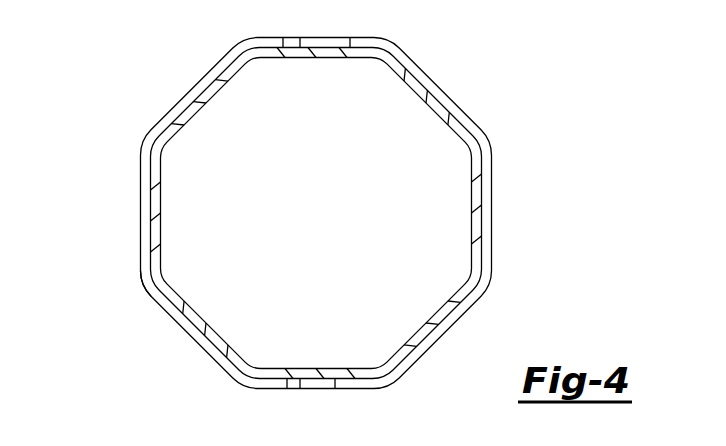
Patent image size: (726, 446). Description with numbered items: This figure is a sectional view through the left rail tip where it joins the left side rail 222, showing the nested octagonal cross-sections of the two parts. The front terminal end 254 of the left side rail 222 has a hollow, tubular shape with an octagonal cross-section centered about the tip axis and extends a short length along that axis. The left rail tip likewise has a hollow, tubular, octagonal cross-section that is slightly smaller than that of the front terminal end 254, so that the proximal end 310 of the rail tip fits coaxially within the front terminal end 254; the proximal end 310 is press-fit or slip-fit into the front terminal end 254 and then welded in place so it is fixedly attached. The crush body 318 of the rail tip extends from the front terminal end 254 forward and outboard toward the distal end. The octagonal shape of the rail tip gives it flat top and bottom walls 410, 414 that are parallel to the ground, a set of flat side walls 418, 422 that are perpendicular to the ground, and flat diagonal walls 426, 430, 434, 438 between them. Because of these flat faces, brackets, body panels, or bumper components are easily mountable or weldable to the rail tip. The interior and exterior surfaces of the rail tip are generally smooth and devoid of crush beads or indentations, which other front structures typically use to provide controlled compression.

The left side rail 222 is at (140, 218).
The front terminal end 254 is at (140, 253).
The proximal end 310 is at (190, 105).
The crush body 318 is at (150, 175).
The top wall 410 is at (328, 57).
The bottom wall 414 is at (302, 372).
The side wall 418 is at (158, 207).
The side wall 422 is at (473, 215).
The diagonal wall 426 is at (430, 91).
The diagonal wall 430 is at (212, 92).
The diagonal wall 434 is at (433, 318).
The diagonal wall 438 is at (205, 325).